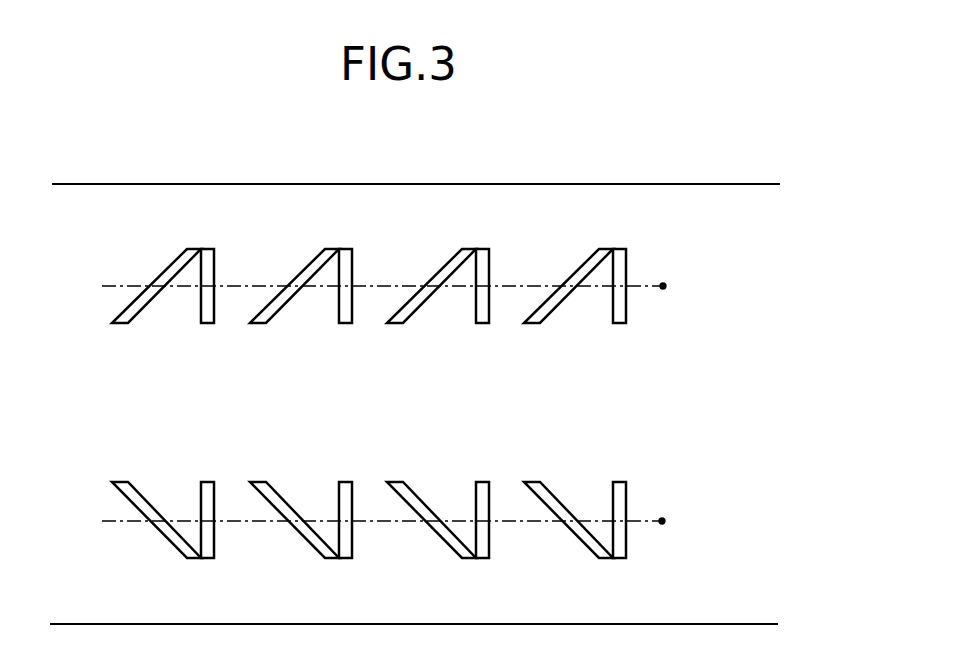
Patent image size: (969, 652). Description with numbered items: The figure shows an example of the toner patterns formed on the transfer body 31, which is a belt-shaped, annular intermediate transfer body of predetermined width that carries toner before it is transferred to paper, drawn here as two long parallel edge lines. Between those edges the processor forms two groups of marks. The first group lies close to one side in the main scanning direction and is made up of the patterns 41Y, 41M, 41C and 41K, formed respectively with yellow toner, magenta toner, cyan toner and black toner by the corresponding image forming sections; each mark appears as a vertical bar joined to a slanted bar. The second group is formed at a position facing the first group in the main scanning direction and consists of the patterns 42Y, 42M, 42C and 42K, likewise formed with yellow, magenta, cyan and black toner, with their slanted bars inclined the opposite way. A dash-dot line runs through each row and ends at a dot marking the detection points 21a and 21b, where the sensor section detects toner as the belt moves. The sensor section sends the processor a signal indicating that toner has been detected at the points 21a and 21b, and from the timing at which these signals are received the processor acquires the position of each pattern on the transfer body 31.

The transfer body 31 is at (475, 183).
The detection point 21a is at (663, 283).
The detection point 21b is at (662, 518).
The yellow pattern 41Y is at (200, 316).
The magenta pattern 41M is at (301, 310).
The cyan pattern 41C is at (438, 310).
The black pattern 41K is at (575, 310).
The yellow pattern 42Y is at (178, 548).
The magenta pattern 42M is at (301, 544).
The cyan pattern 42C is at (438, 544).
The black pattern 42K is at (575, 544).